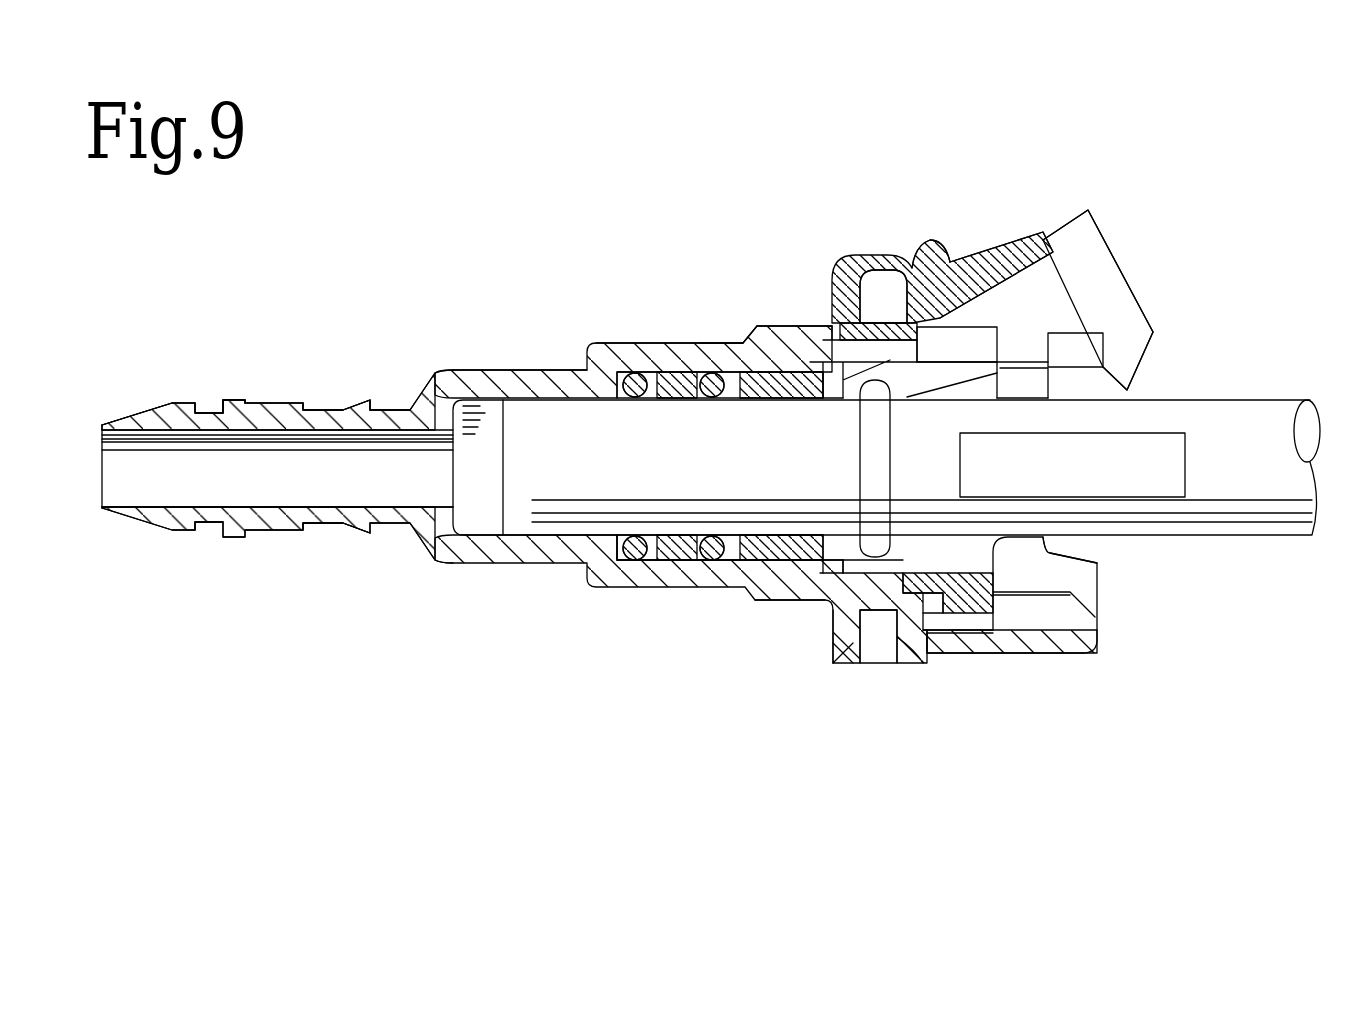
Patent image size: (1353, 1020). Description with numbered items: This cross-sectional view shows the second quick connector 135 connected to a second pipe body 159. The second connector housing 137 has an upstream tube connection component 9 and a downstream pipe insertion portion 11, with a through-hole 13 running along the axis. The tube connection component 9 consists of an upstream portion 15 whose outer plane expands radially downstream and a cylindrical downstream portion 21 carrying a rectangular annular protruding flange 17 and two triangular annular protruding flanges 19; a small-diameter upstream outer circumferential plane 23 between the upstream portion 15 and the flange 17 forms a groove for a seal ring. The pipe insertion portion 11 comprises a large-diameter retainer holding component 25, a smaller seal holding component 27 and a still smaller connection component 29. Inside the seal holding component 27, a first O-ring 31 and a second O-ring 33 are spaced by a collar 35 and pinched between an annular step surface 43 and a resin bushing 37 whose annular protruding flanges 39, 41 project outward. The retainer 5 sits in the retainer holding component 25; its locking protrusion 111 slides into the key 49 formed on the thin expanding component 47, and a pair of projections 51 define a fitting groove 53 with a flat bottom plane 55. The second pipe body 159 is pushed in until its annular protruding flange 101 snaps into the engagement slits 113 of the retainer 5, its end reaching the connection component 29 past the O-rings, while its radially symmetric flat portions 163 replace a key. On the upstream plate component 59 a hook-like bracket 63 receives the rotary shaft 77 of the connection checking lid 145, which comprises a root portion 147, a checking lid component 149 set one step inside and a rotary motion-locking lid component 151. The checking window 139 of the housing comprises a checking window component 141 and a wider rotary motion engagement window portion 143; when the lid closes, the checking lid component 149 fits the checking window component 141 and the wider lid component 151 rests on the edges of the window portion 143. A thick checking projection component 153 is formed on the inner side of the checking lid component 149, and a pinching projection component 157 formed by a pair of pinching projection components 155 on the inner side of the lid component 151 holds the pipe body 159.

The second quick connector 135 is at (213, 283).
The tube connection component 9 is at (268, 388).
The upstream portion 15 is at (172, 406).
The annular protruding flange 17 is at (233, 403).
The annular protruding flanges 19 is at (304, 408).
The through-hole 13 is at (232, 525).
The upstream outer circumferential plane 23 is at (205, 523).
The downstream portion 21 is at (327, 507).
The connection component 29 is at (482, 553).
The second connector housing 137 is at (490, 368).
The pipe insertion portion 11 is at (740, 318).
The second O-ring 33 is at (710, 340).
The seal holding component 27 is at (733, 583).
The first O-ring 31 is at (630, 560).
The annular step surface 43 is at (632, 376).
The annular protruding flange 39 is at (768, 378).
The annular protruding flange 41 is at (812, 380).
The plate component 59 is at (826, 380).
The collar 35 is at (662, 563).
The resin bushing 37 is at (786, 567).
The second pipe body 159 is at (1258, 420).
The annular protruding flange 101 is at (847, 467).
The engagement slits 113 is at (863, 453).
The flat portions 163 is at (1130, 470).
The bracket 63 is at (885, 255).
The rotary shaft component 77 is at (887, 297).
The root portion 147 is at (927, 248).
The checking lid component 149 is at (965, 335).
The checking window component 141 is at (993, 267).
The rotary motion-locking lid component 151 is at (1068, 227).
The connection checking lid 145 is at (1166, 217).
The pinching projection component 157 is at (1133, 270).
The rotary motion engagement window portion 143 is at (1083, 345).
The pinching projection components 155 is at (1127, 350).
The checking projection component 153 is at (1123, 393).
The checking window 139 is at (1016, 372).
The expanding component 47 is at (1073, 643).
The key 49 is at (1057, 623).
The retainer holding component 25 is at (1097, 577).
The retainer 5 is at (987, 657).
The locking protrusion 111 is at (957, 570).
The projections 51 is at (840, 645).
The bottom plane 55 is at (880, 612).
The fitting groove 53 is at (858, 668).